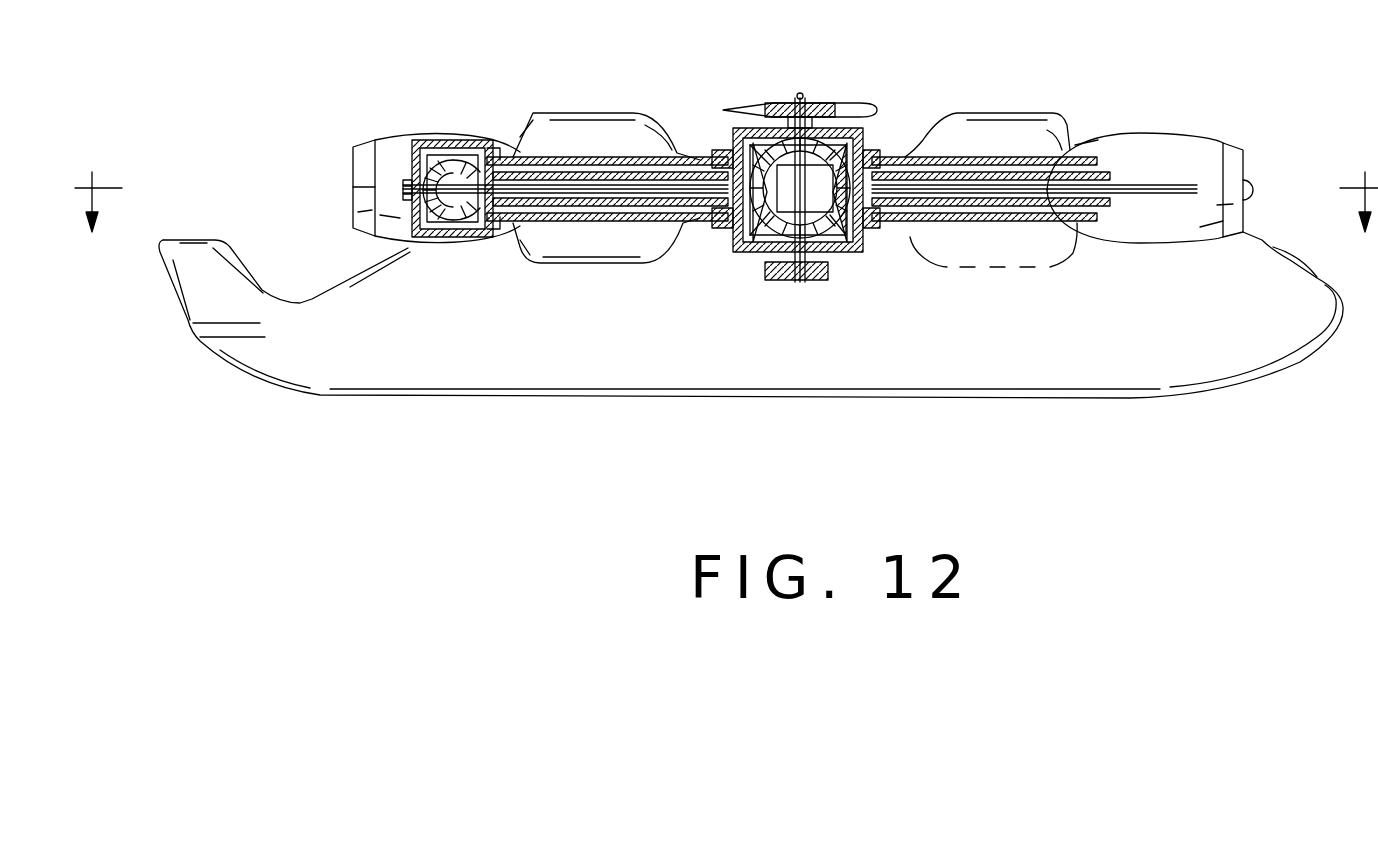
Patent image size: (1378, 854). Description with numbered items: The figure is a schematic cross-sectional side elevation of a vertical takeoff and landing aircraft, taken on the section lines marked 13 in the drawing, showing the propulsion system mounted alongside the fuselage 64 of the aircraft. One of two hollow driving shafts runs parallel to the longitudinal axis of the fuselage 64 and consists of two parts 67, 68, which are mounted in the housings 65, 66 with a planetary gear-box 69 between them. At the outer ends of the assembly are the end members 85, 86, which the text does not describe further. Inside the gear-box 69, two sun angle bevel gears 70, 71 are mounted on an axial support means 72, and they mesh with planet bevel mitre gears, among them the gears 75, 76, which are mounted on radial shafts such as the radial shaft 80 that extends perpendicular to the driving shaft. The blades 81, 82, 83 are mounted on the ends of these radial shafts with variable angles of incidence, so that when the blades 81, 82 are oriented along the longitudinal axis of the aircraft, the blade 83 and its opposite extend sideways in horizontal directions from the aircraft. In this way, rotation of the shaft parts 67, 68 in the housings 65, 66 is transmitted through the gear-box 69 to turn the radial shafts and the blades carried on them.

The fuselage 64 is at (1078, 398).
The left end housing 85 is at (375, 145).
The right end housing 86 is at (1208, 145).
The axial support means 72 is at (435, 150).
The driving shaft part 67 is at (527, 152).
The housing 65 is at (568, 170).
The housing 66 is at (950, 160).
The driving shaft part 68 is at (1010, 160).
The blade 81 is at (622, 120).
The blade 82 is at (1058, 113).
The planet bevel mitre gear 75 is at (730, 140).
The sun angle bevel gear 71 is at (725, 250).
The planet bevel mitre gear 76 is at (843, 252).
The planetary gear-box 69 is at (855, 130).
The sun angle bevel gear 70 is at (800, 98).
The blade 83 is at (760, 108).
The radial shaft 80 is at (795, 282).
The section line 13- 13 is at (726, 226).